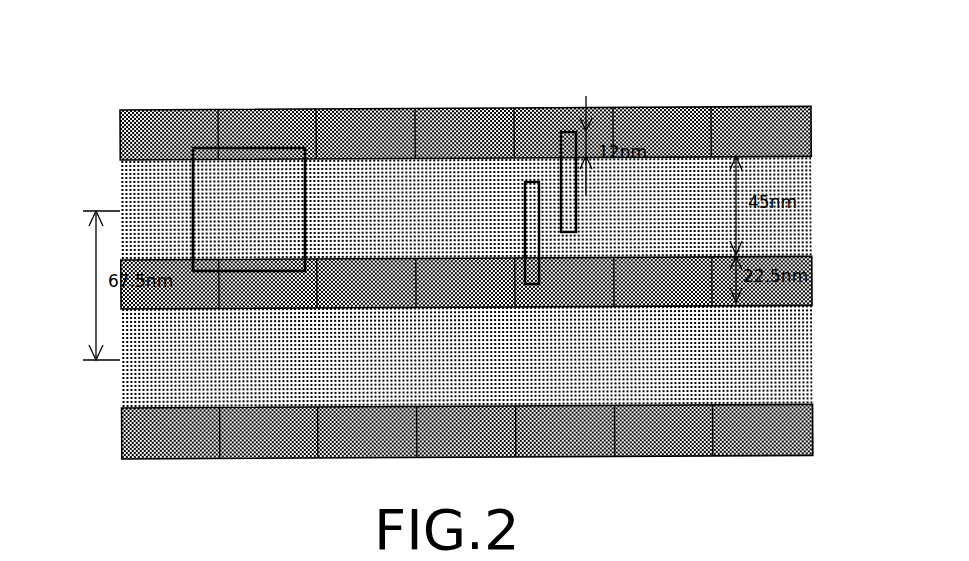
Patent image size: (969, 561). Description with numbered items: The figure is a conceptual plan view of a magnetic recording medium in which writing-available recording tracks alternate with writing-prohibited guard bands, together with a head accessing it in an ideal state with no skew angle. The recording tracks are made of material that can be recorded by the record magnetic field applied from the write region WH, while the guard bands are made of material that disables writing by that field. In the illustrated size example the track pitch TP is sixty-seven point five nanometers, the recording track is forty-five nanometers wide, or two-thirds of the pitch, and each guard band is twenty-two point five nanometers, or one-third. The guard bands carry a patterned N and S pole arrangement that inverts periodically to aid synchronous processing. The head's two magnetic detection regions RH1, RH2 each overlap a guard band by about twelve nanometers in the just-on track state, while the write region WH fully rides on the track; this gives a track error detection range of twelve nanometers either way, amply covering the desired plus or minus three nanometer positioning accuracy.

The write region WH is at (240, 157).
The first magnetic detection region RH1 is at (523, 185).
The second magnetic detection region RH2 is at (557, 124).
The track pitch TP is at (91, 285).